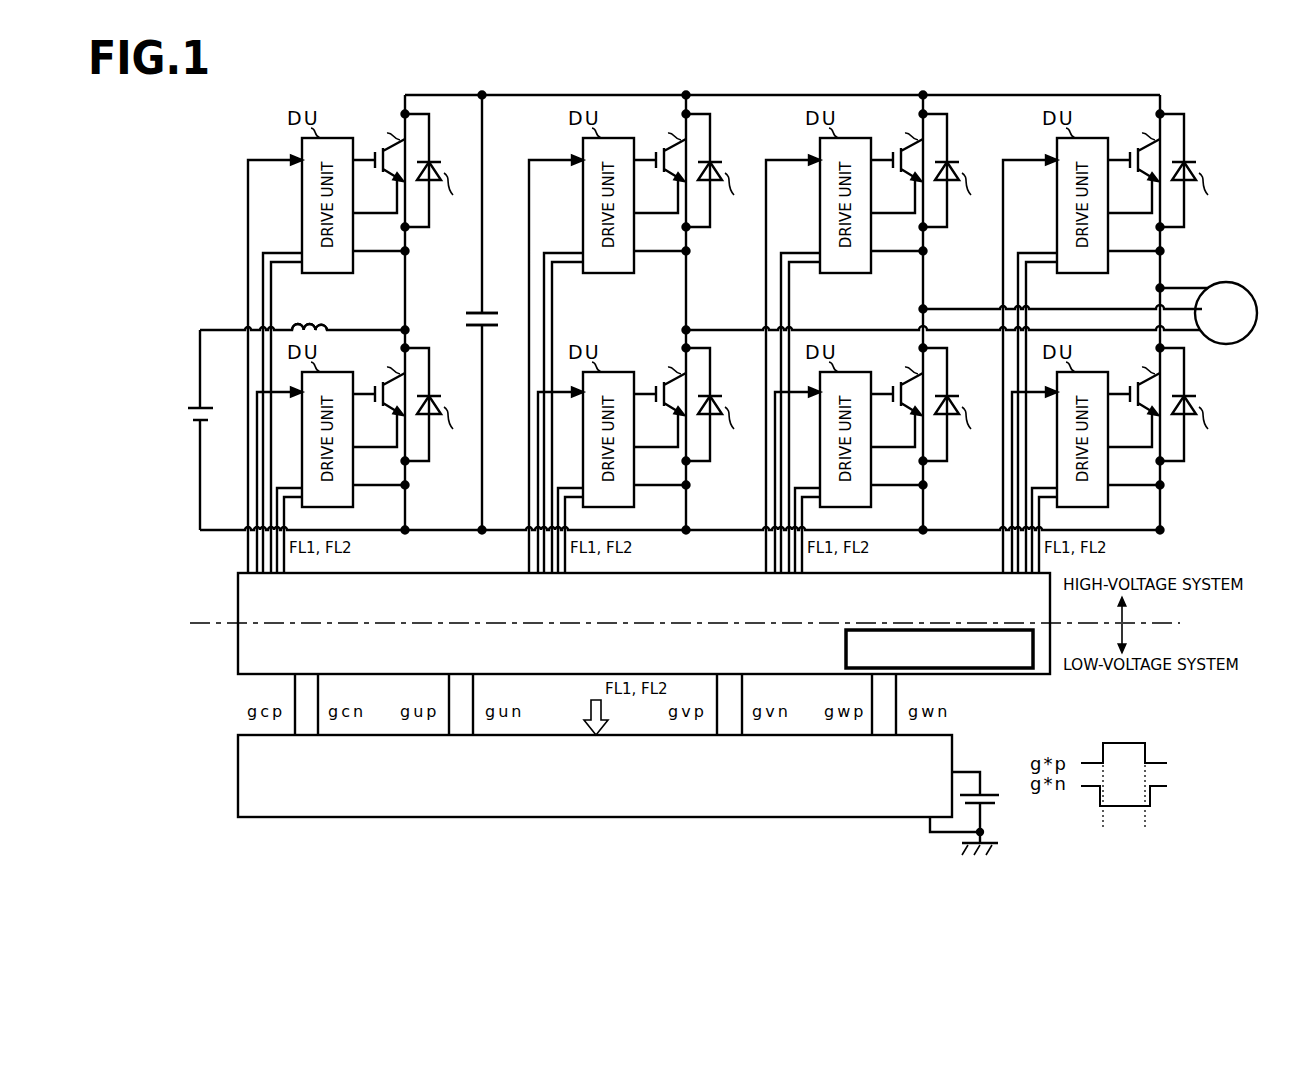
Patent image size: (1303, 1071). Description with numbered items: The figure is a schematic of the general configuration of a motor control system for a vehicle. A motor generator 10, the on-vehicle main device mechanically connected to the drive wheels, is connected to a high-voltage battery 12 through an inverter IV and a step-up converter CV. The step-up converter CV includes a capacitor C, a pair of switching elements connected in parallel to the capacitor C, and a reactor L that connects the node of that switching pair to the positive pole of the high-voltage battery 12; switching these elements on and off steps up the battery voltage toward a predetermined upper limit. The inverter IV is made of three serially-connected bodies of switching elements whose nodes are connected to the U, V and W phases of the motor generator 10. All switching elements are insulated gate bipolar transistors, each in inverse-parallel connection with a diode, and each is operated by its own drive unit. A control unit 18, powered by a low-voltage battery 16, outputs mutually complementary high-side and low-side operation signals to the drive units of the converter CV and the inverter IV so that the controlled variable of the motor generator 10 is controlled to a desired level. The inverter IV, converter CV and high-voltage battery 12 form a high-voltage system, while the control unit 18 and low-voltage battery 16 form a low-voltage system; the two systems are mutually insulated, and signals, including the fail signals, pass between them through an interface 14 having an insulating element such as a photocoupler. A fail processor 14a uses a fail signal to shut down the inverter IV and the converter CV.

The motor generator 10 is at (1227, 282).
The high-voltage battery 12 is at (221, 396).
The interface 14 is at (238, 599).
The fail processor 14a is at (844, 649).
The low-voltage battery 16 is at (968, 773).
The control unit 18 is at (238, 769).
The step-up converter CV is at (445, 85).
The inverter IV is at (1170, 81).
The reactor L is at (307, 321).
The capacitor C is at (486, 312).